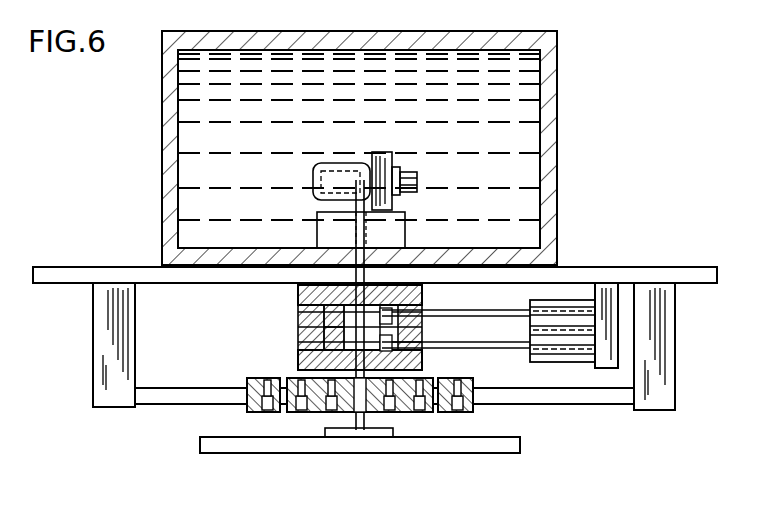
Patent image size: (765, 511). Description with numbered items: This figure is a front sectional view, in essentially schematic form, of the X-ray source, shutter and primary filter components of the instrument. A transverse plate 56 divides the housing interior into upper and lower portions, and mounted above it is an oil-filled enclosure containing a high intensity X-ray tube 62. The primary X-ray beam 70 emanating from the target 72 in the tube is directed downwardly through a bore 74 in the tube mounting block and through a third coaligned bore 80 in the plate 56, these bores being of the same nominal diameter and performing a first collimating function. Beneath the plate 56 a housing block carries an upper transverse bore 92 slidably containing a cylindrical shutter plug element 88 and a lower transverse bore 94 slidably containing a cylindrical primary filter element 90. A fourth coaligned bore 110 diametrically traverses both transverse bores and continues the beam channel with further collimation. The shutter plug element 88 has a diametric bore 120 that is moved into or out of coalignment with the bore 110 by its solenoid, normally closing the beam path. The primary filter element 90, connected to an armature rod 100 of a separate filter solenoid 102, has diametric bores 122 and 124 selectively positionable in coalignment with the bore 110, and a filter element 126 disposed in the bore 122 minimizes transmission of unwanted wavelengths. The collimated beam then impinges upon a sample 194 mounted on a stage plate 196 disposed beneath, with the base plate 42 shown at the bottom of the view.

The base plate 42 is at (519, 440).
The transverse plate 56 is at (719, 268).
The X-ray tube 62 is at (413, 167).
The primary X-ray beam 70 is at (392, 205).
The target 72 is at (353, 187).
The bore 74 is at (357, 222).
The third coaligned bore 80 is at (380, 268).
The shutter plug element 88 is at (308, 318).
The primary filter element 90 is at (300, 348).
The upper transverse bore 92 is at (296, 326).
The lower transverse bore 94 is at (298, 355).
The armature rod 100 is at (484, 350).
The filter solenoid 102 is at (582, 363).
The fourth coaligned bore 110 is at (298, 292).
The diametric bore 120 is at (422, 298).
The diametric bore 122 is at (337, 412).
The diametric bore 124 is at (422, 331).
The filter element 126 is at (380, 412).
The sample 194 is at (370, 434).
The stage plate 196 is at (483, 455).